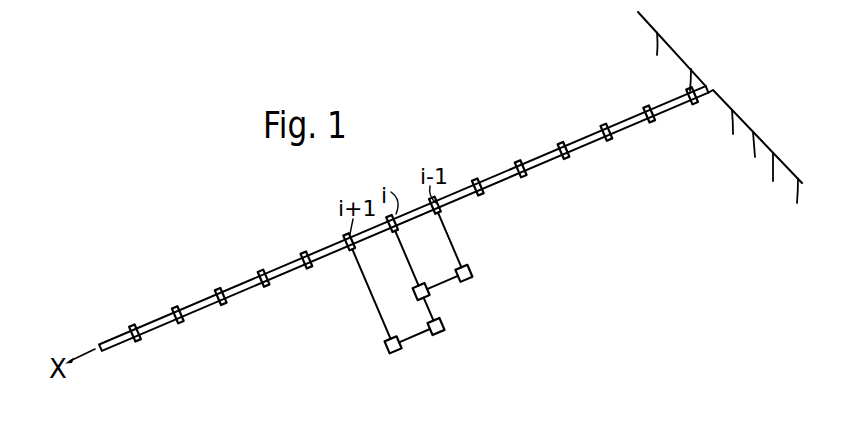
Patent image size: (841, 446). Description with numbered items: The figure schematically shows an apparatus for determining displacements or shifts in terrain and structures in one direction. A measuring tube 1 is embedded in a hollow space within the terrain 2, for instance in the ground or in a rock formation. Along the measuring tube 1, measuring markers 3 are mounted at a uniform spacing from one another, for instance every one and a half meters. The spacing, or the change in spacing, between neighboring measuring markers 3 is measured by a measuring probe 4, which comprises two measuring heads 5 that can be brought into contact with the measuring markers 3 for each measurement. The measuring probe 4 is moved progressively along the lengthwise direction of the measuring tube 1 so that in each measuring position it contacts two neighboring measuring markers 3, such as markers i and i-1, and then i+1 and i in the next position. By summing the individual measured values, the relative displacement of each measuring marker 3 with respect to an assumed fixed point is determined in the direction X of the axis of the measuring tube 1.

The measuring tube 1 is at (314, 256).
The terrain 2 is at (632, 89).
The measuring markers 3 is at (519, 163).
The measuring probe 4 is at (418, 350).
The measuring heads 5 is at (388, 352).